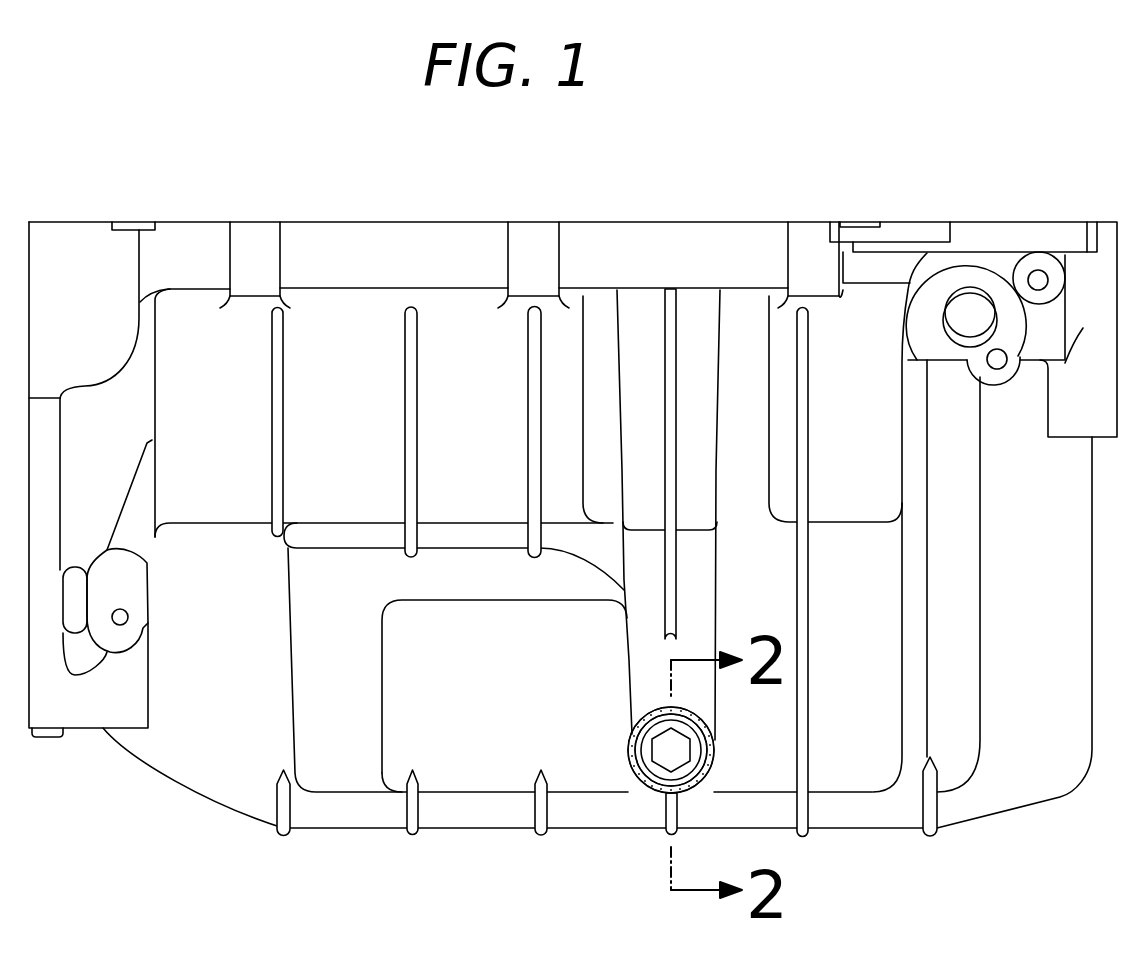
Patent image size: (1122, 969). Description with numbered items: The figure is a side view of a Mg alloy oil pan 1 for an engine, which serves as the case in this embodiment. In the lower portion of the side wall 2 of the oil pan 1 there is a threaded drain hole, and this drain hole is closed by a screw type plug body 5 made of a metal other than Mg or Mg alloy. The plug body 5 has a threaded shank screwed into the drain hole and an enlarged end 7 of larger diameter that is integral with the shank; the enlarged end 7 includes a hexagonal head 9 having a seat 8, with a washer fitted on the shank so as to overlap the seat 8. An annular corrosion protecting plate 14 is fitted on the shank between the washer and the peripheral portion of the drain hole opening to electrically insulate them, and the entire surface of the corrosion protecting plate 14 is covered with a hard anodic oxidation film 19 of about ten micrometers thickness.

The oil pan 1 is at (936, 210).
The side wall 2 is at (640, 657).
The plug body 5 is at (637, 716).
The enlarged end 7 is at (658, 772).
The seat 8 is at (632, 750).
The hexagonal head 9 is at (677, 742).
The corrosion protecting plate 14 is at (716, 755).
The hard anodic oxidation film 19 is at (698, 780).